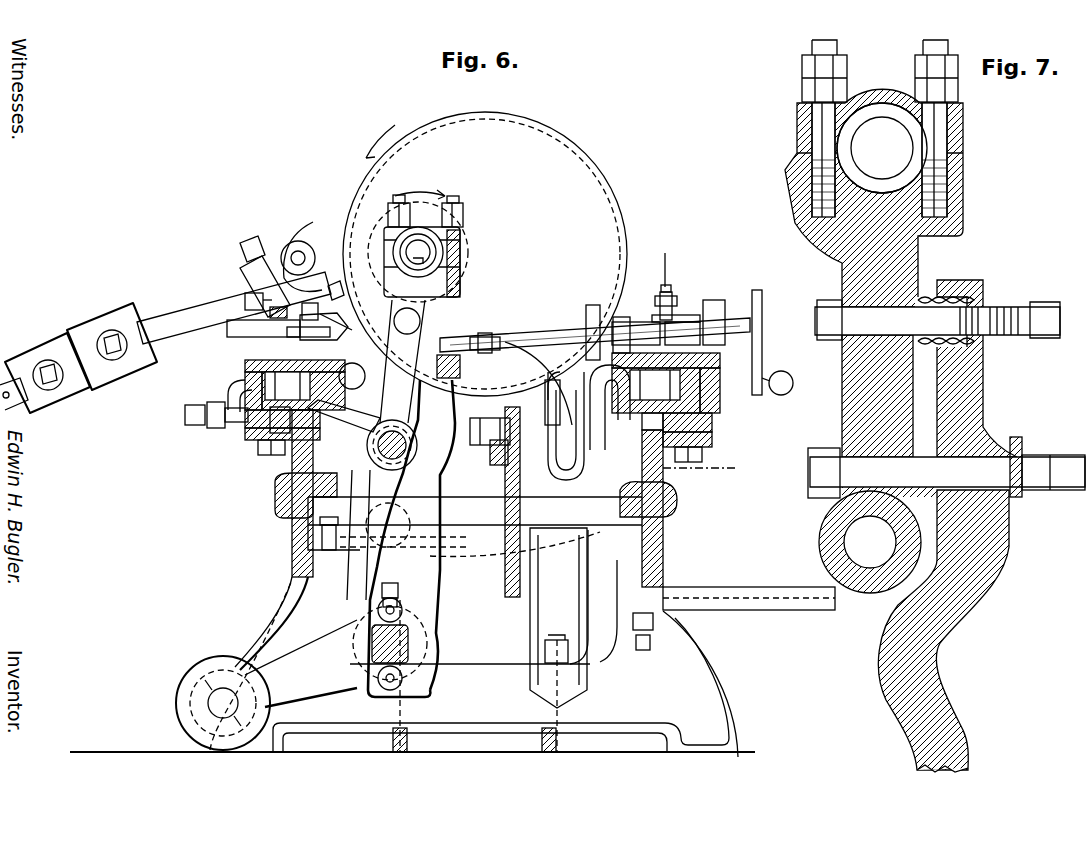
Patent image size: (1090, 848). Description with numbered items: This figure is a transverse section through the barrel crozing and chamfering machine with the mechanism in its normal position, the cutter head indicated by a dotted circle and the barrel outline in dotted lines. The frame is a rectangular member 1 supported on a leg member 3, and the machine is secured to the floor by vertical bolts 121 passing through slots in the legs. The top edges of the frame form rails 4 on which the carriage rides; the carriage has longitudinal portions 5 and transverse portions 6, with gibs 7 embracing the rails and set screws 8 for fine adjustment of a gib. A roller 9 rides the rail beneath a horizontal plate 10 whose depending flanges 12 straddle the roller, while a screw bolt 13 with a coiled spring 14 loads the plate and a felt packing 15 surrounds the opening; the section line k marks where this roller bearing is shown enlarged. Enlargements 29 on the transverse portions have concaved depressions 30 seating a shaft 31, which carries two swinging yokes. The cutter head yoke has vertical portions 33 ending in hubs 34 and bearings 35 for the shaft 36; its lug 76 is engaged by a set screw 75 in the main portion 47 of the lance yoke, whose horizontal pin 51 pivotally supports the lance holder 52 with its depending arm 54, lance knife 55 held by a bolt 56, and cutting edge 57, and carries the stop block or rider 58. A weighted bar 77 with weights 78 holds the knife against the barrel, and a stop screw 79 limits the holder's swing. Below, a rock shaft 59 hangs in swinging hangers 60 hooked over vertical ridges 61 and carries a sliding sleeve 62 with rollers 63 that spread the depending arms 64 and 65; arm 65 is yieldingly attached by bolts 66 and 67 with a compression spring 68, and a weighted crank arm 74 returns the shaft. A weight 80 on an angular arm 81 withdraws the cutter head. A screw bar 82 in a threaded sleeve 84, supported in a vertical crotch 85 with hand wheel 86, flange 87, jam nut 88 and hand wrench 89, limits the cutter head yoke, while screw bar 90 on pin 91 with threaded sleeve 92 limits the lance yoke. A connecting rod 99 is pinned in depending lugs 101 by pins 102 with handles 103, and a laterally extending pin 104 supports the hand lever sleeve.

In FIG. 6, the rectangular frame member 1 is at (666, 503).
In FIG. 6, the leg member 3 is at (505, 684).
In FIG. 6, the rails 4 is at (712, 425).
In FIG. 6, the longitudinal portions of carriage 5 is at (720, 400).
In FIG. 6, the transverse portions of carriage 6 is at (605, 410).
In FIG. 6, the gibs 7 is at (712, 442).
In FIG. 6, the set screws 8 is at (192, 424).
In FIG. 6, the roller 9 is at (472, 385).
In FIG. 6, the horizontal plate 10 is at (705, 375).
In FIG. 6, the depending flanges 12 is at (627, 420).
In FIG. 6, the screw bolt 13 is at (673, 293).
In FIG. 6, the coiled spring 14 is at (690, 316).
In FIG. 6, the packing 15 is at (720, 386).
In FIG. 6, the enlargements 29 is at (366, 445).
In FIG. 6, the concaved depressions 30 is at (372, 450).
In FIG. 6, the shaft 31 is at (388, 460).
In FIG. 6, the vertical portions of yoke 33 is at (402, 361).
In FIG. 7, the vertical portions of yoke 33 is at (850, 410).
In FIG. 6, the hubs 34 is at (405, 458).
In FIG. 7, the hubs 34 is at (870, 542).
In FIG. 6, the bearings 35 is at (444, 253).
In FIG. 7, the bearings 35 is at (882, 148).
In FIG. 6, the shaft 36 is at (438, 268).
In FIG. 6, the main portion of lance yoke 47 is at (332, 336).
In FIG. 6, the horizontal pin 51 is at (298, 241).
In FIG. 6, the lance holder 52 is at (250, 262).
In FIG. 6, the depending arm 54 is at (308, 303).
In FIG. 6, the lance knife 55 is at (263, 328).
In FIG. 6, the bolt 56 is at (298, 330).
In FIG. 6, the cutting edge 57 is at (352, 328).
In FIG. 6, the stop block or rider 58 is at (313, 224).
In FIG. 6, the rock shaft 59 is at (365, 630).
In FIG. 6, the swinging hangers 60 is at (394, 580).
In FIG. 6, the vertical ridges 61 is at (515, 543).
In FIG. 6, the sliding sleeve 62 is at (408, 635).
In FIG. 6, the rollers 63 is at (400, 610).
In FIG. 6, the depending arm 64 is at (365, 600).
In FIG. 6, the depending arm 65 is at (420, 645).
In FIG. 7, the depending arm 65 is at (940, 652).
In FIG. 6, the bolt 66 is at (492, 455).
In FIG. 7, the bolt 66 is at (946, 467).
In FIG. 6, the bolt 67 is at (486, 344).
In FIG. 7, the bolt 67 is at (1050, 305).
In FIG. 6, the compression spring 68 is at (447, 366).
In FIG. 7, the compression spring 68 is at (937, 290).
In FIG. 6, the weighted crank arm 74 is at (266, 665).
In FIG. 6, the set screw 75 is at (334, 283).
In FIG. 6, the lug 76 is at (418, 246).
In FIG. 7, the lug 76 is at (798, 203).
In FIG. 6, the weighted bar 77 is at (234, 308).
In FIG. 6, the weights 78 is at (78, 358).
In FIG. 6, the stop screw 79 is at (250, 300).
In FIG. 6, the weight 80 is at (558, 640).
In FIG. 6, the angular arm 81 is at (546, 403).
In FIG. 6, the screw bar 82 is at (548, 330).
In FIG. 6, the threaded sleeve 84 is at (636, 333).
In FIG. 6, the vertical crotch 85 is at (724, 305).
In FIG. 6, the hand wheel 86 is at (763, 300).
In FIG. 6, the flange 87 is at (682, 333).
In FIG. 6, the jam nut 88 is at (593, 305).
In FIG. 6, the hand wrench 89 is at (622, 317).
In FIG. 6, the screw bar 90 is at (512, 368).
In FIG. 6, the pin 91 is at (352, 376).
In FIG. 6, the threaded sleeve 92 is at (630, 365).
In FIG. 6, the connecting rod 99 is at (505, 512).
In FIG. 6, the depending lugs 101 is at (520, 470).
In FIG. 6, the pins 102 is at (490, 418).
In FIG. 6, the handle 103 is at (575, 467).
In FIG. 6, the laterally extending pin 104 is at (749, 598).
In FIG. 6, the vertical bolts 121 is at (492, 677).
In FIG. 6, the section line k is at (703, 355).